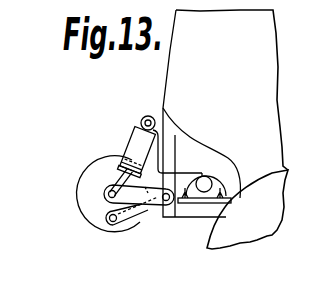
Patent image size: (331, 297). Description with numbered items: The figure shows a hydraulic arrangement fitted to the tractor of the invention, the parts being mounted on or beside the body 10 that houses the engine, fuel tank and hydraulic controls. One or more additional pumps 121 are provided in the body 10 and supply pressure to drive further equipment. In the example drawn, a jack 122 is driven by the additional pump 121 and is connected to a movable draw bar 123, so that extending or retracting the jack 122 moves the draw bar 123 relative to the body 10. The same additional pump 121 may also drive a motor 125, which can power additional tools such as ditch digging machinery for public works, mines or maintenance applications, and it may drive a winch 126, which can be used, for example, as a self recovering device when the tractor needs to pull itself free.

The body 10 is at (234, 97).
The additional pump 121 is at (199, 194).
The jack 122 is at (133, 137).
The movable draw bar 123 is at (113, 226).
The motor 125 is at (207, 162).
The winch 126 is at (76, 197).